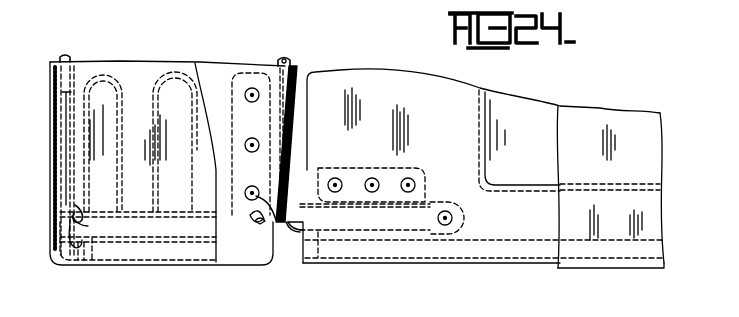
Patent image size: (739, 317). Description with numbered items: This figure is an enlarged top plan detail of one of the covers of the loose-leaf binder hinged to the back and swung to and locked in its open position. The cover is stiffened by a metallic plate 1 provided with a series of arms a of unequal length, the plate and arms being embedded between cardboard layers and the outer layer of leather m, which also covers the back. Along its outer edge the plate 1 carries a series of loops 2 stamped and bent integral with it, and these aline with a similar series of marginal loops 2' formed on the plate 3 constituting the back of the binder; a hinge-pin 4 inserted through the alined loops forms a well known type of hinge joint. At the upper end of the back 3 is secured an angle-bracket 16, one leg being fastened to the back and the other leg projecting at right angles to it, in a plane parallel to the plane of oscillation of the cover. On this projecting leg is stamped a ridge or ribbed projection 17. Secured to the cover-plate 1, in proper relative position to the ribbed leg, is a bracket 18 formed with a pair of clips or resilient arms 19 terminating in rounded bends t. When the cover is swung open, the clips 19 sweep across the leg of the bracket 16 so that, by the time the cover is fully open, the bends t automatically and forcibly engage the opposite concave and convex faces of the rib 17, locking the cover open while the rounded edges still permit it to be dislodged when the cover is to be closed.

The metallic plate 1 is at (378, 88).
The loops 2 is at (151, 163).
The marginal loops 2' is at (175, 141).
The plate constituting the back of the binder 3 is at (240, 230).
The hinge-pin 4 is at (67, 58).
The angle-bracket 16 is at (240, 78).
The ridge or ribbed projection 17 is at (80, 212).
The bracket 18 is at (412, 170).
The clips or resilient arms 19 is at (291, 234).
The bends t is at (262, 252).
The arms a is at (485, 113).
The outer layer of leather m is at (603, 245).